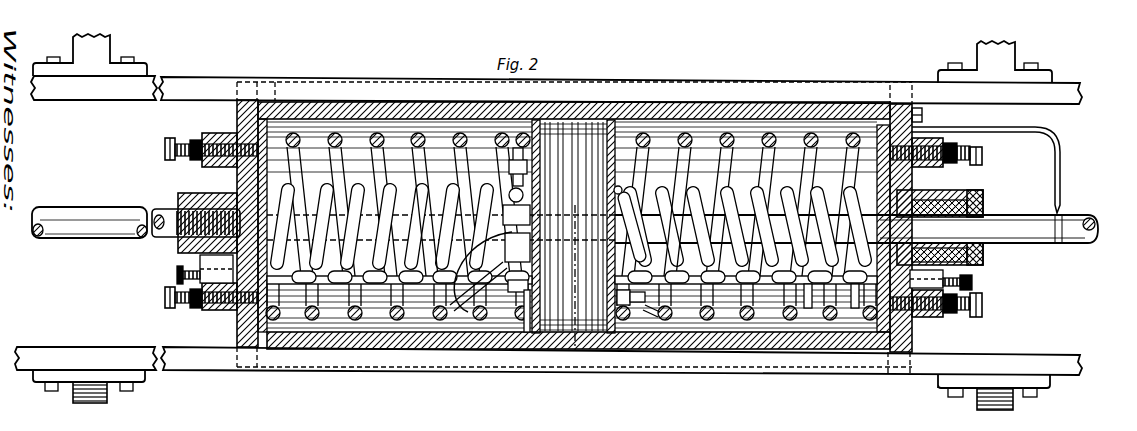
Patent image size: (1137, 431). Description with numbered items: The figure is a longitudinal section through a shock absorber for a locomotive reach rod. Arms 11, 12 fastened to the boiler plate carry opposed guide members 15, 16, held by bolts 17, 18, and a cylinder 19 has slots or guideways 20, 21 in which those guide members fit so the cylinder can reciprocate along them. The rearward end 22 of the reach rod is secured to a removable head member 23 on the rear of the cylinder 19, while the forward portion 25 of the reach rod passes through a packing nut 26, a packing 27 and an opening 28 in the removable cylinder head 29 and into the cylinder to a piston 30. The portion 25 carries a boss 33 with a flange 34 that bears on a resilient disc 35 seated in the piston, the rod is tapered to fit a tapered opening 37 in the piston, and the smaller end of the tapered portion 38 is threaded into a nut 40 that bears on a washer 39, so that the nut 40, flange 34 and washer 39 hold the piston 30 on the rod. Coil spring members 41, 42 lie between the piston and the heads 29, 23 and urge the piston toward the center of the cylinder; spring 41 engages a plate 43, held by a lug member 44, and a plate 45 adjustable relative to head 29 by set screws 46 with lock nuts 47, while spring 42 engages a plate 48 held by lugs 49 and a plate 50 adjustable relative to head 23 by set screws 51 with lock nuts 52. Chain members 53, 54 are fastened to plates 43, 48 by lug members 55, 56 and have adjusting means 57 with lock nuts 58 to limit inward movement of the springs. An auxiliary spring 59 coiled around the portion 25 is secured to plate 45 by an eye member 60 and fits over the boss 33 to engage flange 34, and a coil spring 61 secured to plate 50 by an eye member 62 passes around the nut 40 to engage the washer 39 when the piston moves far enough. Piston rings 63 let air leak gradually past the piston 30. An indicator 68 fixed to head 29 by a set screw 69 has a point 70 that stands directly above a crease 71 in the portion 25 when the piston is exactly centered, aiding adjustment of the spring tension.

The arm 11 is at (97, 44).
The arm 12 is at (85, 400).
The guide member 15 is at (128, 90).
The guide member 16 is at (147, 363).
The bolt 17 is at (133, 68).
The bolt 18 is at (130, 392).
The cylinder 19 is at (788, 145).
The slot or guideway 20 is at (243, 100).
The slot or guideway 21 is at (245, 367).
The rearward end of the reach rod 22 is at (83, 210).
The removable head member 23 is at (238, 182).
The forward portion of the reach rod 25 is at (1073, 223).
The packing nut 26 is at (983, 204).
The packing 27 is at (935, 207).
The opening 28 is at (912, 186).
The removable cylinder head 29 is at (912, 332).
The piston 30 is at (580, 334).
The boss 33 is at (619, 187).
The flange 34 is at (614, 160).
The disc 35 is at (494, 172).
The tapered opening 37 is at (520, 345).
The tapered portion 38 is at (538, 345).
The washer 39 is at (500, 265).
The nut 40 is at (450, 308).
The coil spring member 41 is at (730, 135).
The coil spring member 42 is at (378, 135).
The plate 43 is at (620, 300).
The lug member 44 is at (652, 310).
The plate 45 is at (878, 300).
The set screw 46 is at (935, 315).
The lock nut 47 is at (960, 150).
The plate 48 is at (513, 300).
The lug 49 is at (435, 150).
The plate 50 is at (263, 318).
The set screw 51 is at (178, 143).
The lock nut 52 is at (194, 143).
The chain member 53 is at (772, 284).
The chain member 54 is at (340, 283).
The lug member 55 is at (636, 298).
The lug member 56 is at (485, 322).
The adjusting means 57 is at (176, 270).
The lock nut 58 is at (200, 262).
The auxiliary spring 59 is at (808, 280).
The eye member 60 is at (855, 295).
The coil spring 61 is at (318, 190).
The eye member 62 is at (183, 163).
The piston ring 63 is at (555, 135).
The indicator 68 is at (947, 130).
The set screw 69 is at (922, 117).
The point 70 is at (1060, 212).
The crease 71 is at (1057, 237).